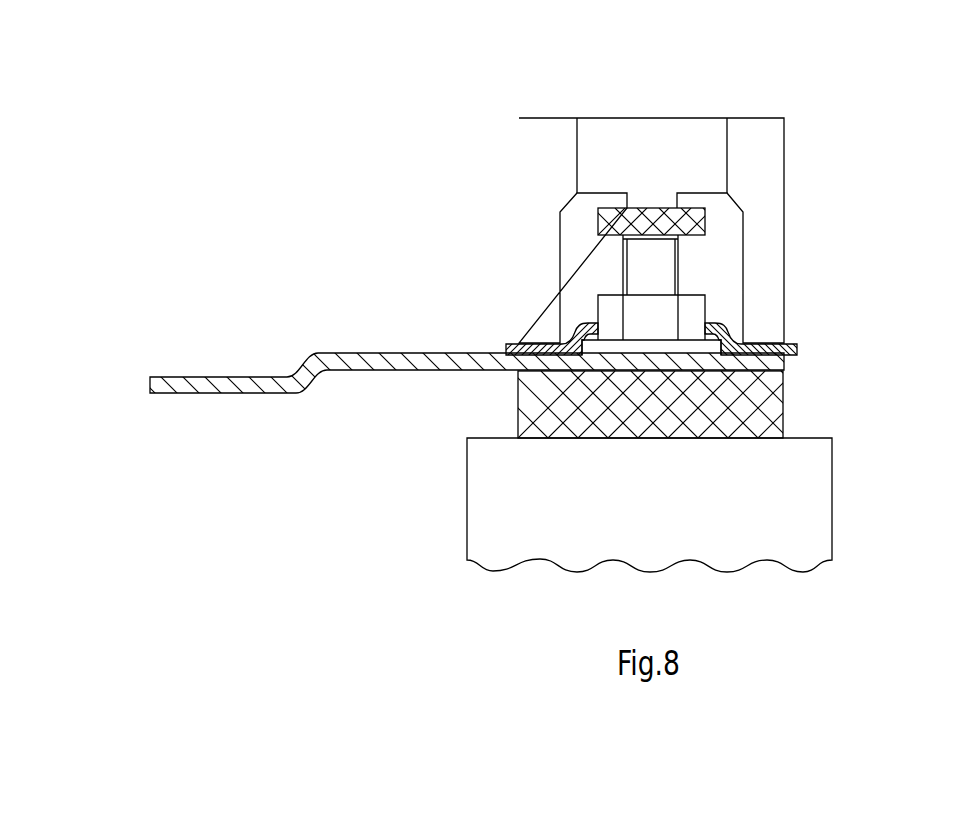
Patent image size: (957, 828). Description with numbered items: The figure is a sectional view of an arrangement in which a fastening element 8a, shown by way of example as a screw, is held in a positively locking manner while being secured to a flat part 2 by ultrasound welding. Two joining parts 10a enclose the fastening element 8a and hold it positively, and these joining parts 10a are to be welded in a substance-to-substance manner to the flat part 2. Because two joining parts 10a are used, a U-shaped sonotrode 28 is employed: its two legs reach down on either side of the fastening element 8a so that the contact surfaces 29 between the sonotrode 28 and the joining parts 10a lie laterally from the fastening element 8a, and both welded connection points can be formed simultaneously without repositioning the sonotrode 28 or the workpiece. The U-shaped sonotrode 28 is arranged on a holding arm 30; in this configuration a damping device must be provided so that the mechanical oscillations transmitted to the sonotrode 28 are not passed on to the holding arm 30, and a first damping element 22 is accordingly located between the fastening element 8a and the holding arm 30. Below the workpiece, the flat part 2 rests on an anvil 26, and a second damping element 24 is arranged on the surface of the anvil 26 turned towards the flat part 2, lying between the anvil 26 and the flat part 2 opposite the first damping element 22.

The flat part 2 is at (372, 357).
The fastening element 8a is at (697, 312).
The joining part 10a is at (768, 345).
The first damping element 22 is at (700, 222).
The second damping element 24 is at (767, 413).
The anvil 26 is at (815, 492).
The U-shaped sonotrode 28 is at (544, 132).
The contact surface 29 is at (514, 352).
The holding arm 30 is at (620, 130).